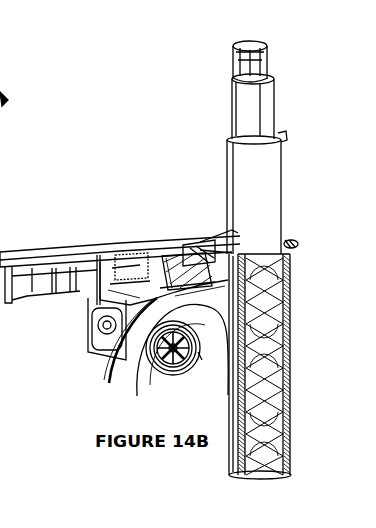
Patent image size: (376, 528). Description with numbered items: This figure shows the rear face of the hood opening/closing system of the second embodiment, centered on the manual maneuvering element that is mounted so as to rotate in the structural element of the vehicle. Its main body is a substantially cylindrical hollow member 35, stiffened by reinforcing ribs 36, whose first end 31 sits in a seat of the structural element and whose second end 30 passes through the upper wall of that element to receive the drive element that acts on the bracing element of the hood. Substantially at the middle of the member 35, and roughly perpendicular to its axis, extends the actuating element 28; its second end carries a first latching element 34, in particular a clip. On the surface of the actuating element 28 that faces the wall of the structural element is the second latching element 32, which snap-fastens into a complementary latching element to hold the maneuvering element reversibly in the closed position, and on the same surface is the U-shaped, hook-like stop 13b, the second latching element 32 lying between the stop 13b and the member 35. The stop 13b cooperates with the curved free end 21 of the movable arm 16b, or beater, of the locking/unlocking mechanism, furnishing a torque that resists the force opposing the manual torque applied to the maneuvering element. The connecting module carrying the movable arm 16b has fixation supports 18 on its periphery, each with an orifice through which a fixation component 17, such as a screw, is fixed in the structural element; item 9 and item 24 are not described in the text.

The frame 9 is at (32, 302).
The stop 13b is at (123, 348).
The movable arm 16b is at (145, 352).
The fixation component 17 is at (98, 325).
The fixation support 18 is at (100, 348).
The free end 21 is at (152, 292).
The rack 24 is at (247, 392).
The actuating element 28 is at (97, 252).
The second end 30 is at (256, 42).
The first end 31 is at (258, 480).
The second latching element 32 is at (186, 245).
The first latching element 34 is at (298, 243).
The member 35 is at (268, 212).
The reinforcing ribs 36 is at (258, 274).